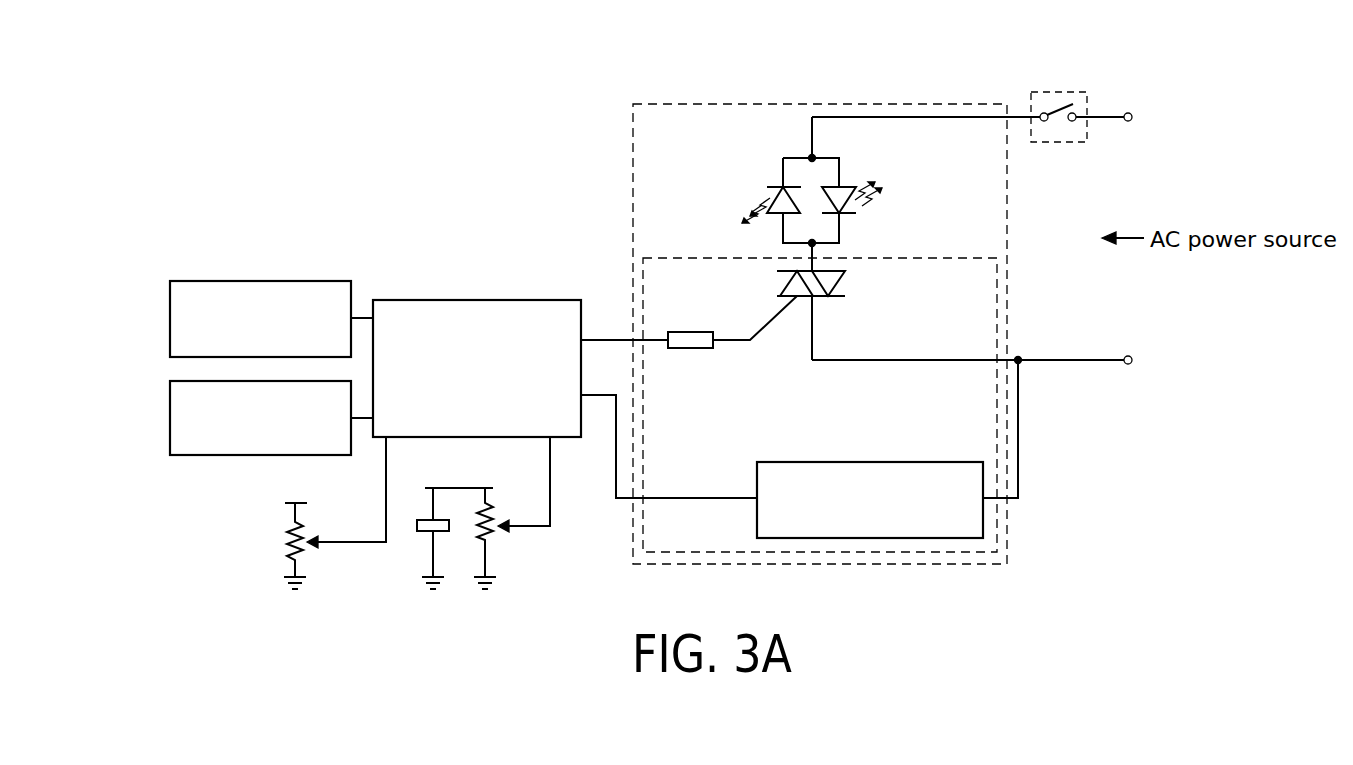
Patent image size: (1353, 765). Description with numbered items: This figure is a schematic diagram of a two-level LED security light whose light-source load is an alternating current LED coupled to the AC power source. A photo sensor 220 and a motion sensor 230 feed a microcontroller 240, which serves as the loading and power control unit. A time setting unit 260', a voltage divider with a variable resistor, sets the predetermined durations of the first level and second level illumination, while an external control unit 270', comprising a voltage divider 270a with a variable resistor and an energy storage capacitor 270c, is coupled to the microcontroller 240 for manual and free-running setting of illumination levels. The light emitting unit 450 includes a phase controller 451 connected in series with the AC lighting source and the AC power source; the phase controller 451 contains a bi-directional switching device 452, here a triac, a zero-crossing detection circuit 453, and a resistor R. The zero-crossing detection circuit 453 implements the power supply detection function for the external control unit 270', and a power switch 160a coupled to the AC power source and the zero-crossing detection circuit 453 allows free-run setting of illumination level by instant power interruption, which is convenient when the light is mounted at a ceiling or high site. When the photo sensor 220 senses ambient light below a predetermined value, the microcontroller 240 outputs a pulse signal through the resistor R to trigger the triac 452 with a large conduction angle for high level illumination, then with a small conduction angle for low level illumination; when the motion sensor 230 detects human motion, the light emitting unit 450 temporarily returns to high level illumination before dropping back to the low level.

The photo sensor 220 is at (170, 318).
The motion sensor 230 is at (170, 418).
The microcontroller 240 is at (540, 300).
The time setting unit 260' is at (265, 532).
The external control unit 270' is at (432, 570).
The energy storage capacitor 270c is at (423, 538).
The voltage divider 270a is at (502, 533).
The light emitting unit 450 is at (632, 124).
The phase controller 451 is at (940, 258).
The bi-directional switching device 452 is at (823, 300).
The zero-crossing detection circuit 453 is at (870, 462).
The power switch 160a is at (1059, 91).